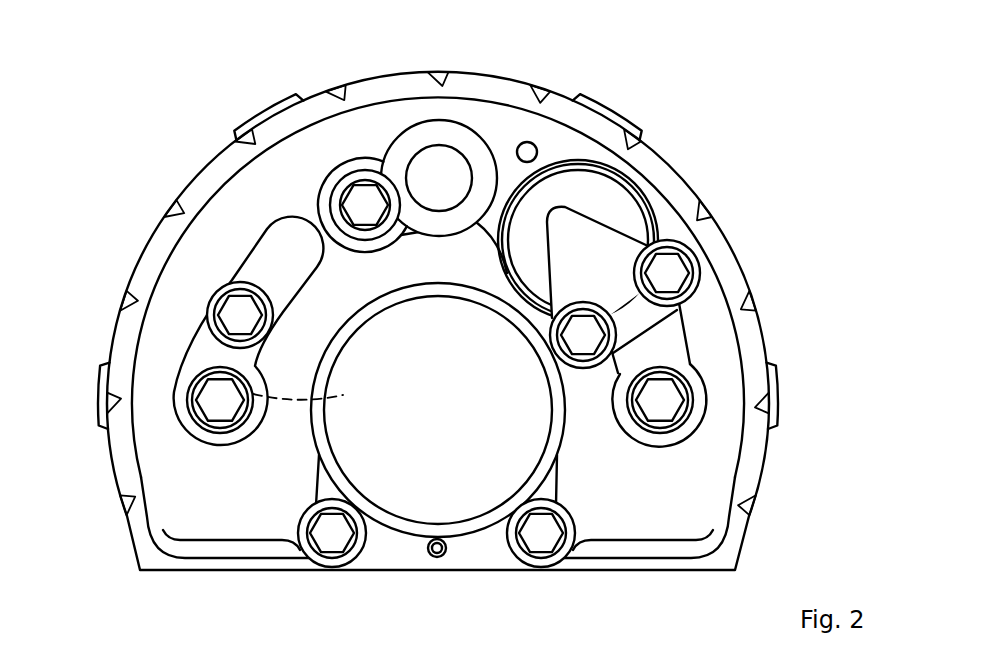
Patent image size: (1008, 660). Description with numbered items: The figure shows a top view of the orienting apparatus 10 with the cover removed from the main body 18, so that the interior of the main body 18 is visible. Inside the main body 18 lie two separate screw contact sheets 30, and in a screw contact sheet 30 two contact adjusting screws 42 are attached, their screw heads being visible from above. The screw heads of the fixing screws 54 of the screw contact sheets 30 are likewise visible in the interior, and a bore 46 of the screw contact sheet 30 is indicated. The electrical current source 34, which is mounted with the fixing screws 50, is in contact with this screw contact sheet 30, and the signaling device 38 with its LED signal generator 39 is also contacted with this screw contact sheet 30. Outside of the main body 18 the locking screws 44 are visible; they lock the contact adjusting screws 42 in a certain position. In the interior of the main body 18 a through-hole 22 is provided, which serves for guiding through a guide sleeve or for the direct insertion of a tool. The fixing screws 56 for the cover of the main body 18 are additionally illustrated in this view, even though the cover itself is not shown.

The orienting apparatus 10 is at (798, 184).
The main body 18 is at (200, 187).
The through-hole 22 is at (424, 421).
The screw contact sheet 30 is at (207, 347).
The electrical current source 34 is at (603, 203).
The signaling device 38 is at (435, 165).
The LED signal generator 39 is at (439, 178).
The contact adjusting screw 42 is at (363, 197).
The locking screw 44 is at (277, 112).
The bore of the screw contact sheet 46 is at (315, 389).
The fixing screw for battery 50 is at (657, 268).
The fixing screw for second contact sheet 54 is at (237, 312).
The fixing screw for cover of the main body 56 is at (336, 545).